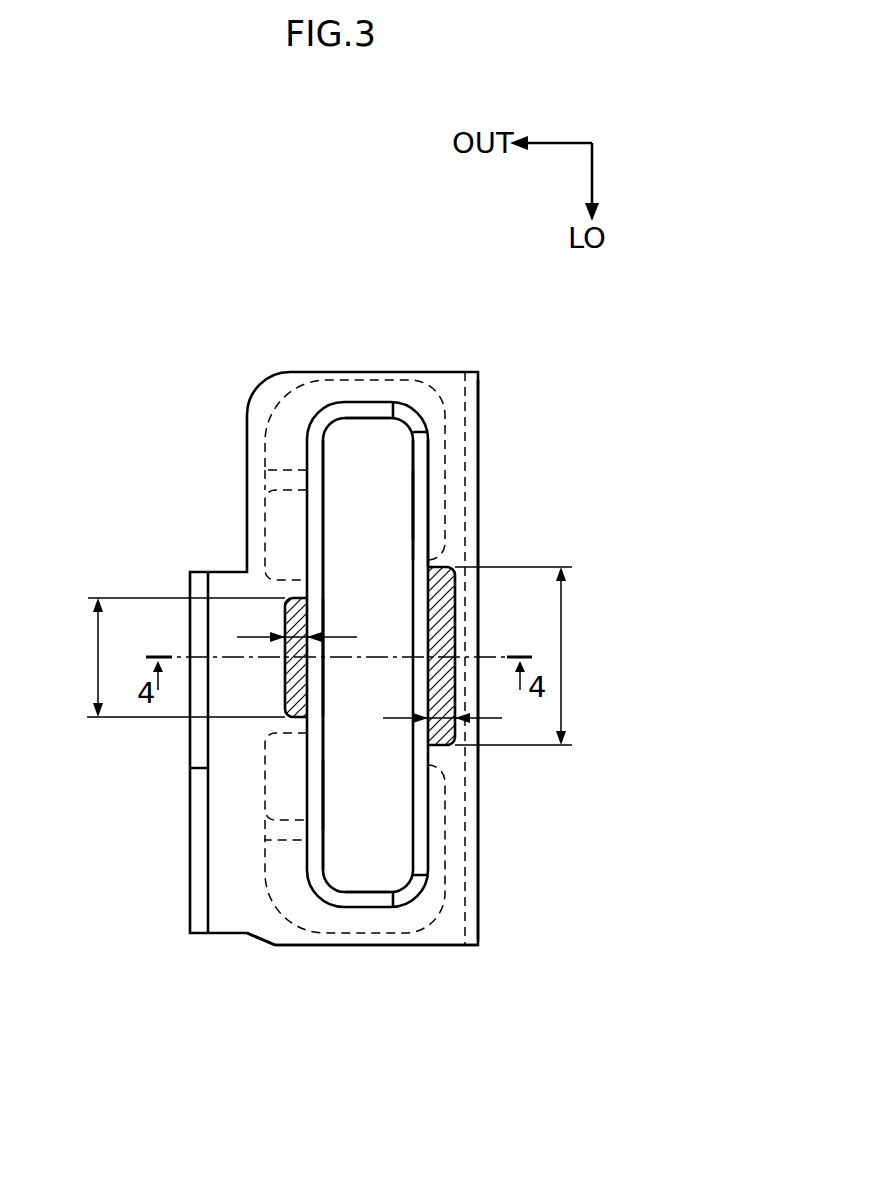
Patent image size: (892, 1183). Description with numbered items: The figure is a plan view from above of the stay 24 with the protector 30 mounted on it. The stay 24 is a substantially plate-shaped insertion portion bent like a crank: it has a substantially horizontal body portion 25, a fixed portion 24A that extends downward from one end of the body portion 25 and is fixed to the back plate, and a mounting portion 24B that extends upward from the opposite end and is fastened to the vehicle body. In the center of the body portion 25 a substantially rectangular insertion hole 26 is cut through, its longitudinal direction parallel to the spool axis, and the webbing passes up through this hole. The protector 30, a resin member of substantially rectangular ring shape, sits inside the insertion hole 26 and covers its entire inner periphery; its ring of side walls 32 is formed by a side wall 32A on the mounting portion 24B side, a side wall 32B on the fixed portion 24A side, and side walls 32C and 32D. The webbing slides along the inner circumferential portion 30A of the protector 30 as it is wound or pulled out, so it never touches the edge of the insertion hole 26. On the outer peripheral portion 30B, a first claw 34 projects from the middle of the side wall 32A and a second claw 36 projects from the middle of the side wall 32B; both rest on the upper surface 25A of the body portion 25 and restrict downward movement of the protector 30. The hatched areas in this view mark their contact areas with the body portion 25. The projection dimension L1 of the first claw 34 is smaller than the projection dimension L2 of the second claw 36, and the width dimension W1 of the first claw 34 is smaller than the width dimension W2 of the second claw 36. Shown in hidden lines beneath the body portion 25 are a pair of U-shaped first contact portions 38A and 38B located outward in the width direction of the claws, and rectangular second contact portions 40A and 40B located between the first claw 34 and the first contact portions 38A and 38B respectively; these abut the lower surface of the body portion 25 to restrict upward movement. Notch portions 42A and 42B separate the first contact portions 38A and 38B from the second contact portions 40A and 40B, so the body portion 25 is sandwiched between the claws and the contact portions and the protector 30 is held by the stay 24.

The stay 24 is at (400, 304).
The fixed portion 24A is at (480, 393).
The mounting portion 24B is at (190, 912).
The body portion 25 is at (325, 947).
The upper surface 25A is at (267, 923).
The insertion hole 26 is at (423, 505).
The protector 30 is at (333, 532).
The inner circumferential portion 30A is at (323, 788).
The outer peripheral portion 30B is at (430, 560).
The sleeve 32 is at (367, 654).
The side wall 32A is at (323, 618).
The side wall 32B is at (412, 485).
The side wall 32C is at (370, 418).
The side wall 32D is at (370, 890).
The first claw 34 is at (285, 683).
The second claw 36 is at (455, 613).
The first contact portion 38A is at (297, 398).
The first contact portion 38B is at (413, 923).
The second contact portion 40A is at (265, 533).
The second contact portion 40B is at (265, 780).
The notch portion 42A is at (283, 483).
The notch portion 42B is at (273, 830).
The width dimension W1 is at (98, 657).
The width dimension W2 is at (561, 643).
The projection dimension L1 is at (287, 623).
The projection dimension L2 is at (433, 727).